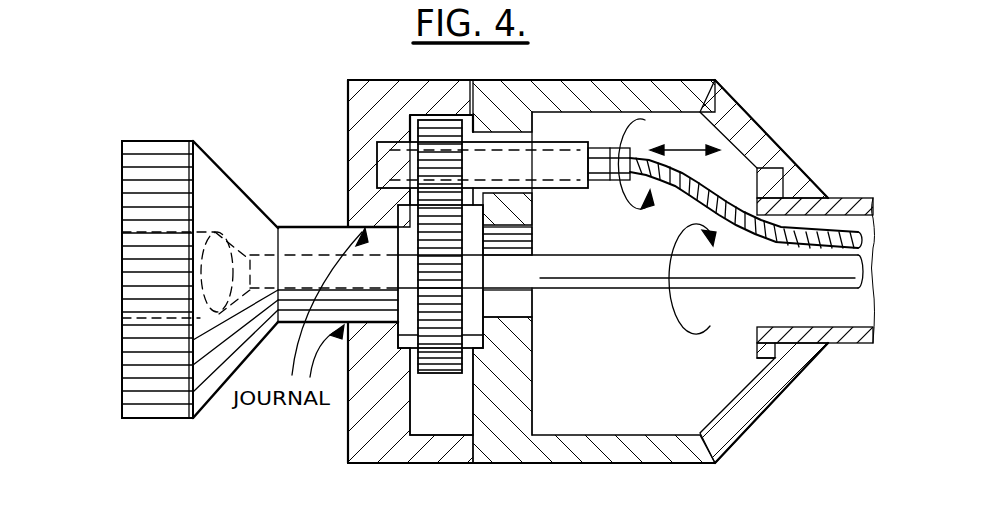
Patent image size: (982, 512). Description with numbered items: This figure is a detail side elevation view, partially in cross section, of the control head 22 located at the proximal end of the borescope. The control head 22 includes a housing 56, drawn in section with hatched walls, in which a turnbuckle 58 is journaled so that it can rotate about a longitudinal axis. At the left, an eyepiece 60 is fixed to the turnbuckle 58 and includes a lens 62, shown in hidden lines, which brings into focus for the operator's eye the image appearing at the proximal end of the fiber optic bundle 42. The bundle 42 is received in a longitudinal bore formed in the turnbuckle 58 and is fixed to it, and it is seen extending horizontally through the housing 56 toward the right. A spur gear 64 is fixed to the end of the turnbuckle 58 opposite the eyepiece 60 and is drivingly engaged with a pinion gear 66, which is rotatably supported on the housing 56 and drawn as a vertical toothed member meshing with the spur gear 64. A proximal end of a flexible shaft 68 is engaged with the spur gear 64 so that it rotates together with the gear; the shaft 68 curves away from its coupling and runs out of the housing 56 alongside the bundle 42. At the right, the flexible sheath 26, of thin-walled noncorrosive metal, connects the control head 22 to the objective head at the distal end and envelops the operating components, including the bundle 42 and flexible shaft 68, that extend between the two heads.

The control head 22 is at (760, 432).
The flexible sheath 26 is at (848, 352).
The fiber optic bundle 42 is at (597, 280).
The housing 56 is at (391, 452).
The turnbuckle 58 is at (300, 240).
The eyepiece 60 is at (210, 170).
The lens 62 is at (253, 181).
The spur gear 64 is at (438, 360).
The pinion gear 66 is at (443, 118).
The flexible shaft 68 is at (712, 183).